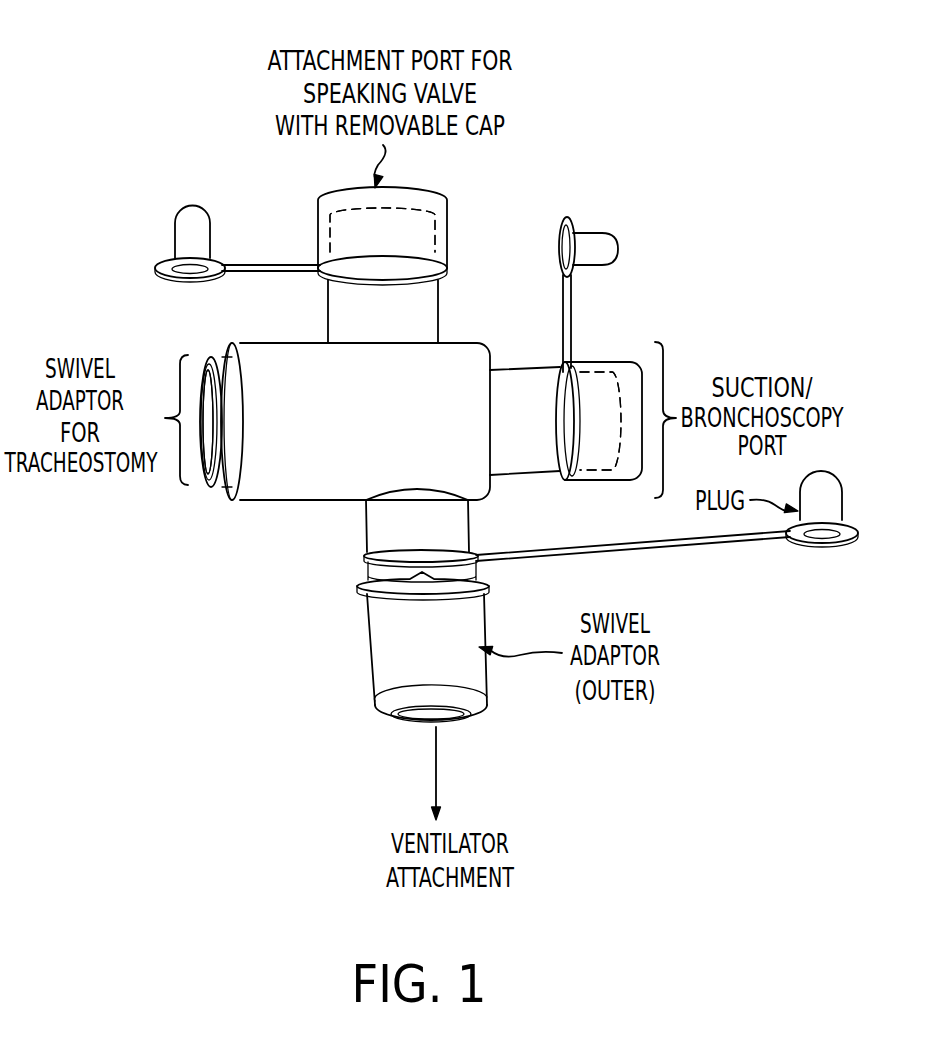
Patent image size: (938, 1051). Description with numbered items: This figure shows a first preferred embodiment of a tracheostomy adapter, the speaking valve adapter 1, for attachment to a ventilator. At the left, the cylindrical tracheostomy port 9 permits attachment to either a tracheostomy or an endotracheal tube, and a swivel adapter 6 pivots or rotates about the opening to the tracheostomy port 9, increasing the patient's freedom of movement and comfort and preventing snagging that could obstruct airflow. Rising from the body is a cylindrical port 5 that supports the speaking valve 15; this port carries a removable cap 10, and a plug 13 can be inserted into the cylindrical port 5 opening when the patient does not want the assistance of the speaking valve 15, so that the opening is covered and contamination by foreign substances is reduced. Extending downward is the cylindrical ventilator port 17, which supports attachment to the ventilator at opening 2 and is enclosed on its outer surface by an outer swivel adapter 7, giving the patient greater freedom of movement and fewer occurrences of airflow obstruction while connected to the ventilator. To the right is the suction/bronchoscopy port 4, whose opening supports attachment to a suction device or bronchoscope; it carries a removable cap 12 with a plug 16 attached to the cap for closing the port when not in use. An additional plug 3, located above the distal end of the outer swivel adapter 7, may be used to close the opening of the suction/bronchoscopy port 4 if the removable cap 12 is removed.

The speaking valve adapter 1 is at (184, 80).
The opening 2 is at (362, 724).
The plug 3 is at (842, 482).
The suction/bronchoscopy port 4 is at (770, 372).
The cylindrical port 5 is at (440, 318).
The swivel adapter 6 is at (232, 502).
The outer swivel adapter 7 is at (665, 657).
The tracheostomy port 9 is at (294, 482).
The removable cap 10 is at (448, 240).
The removable cap 12 is at (596, 366).
The plug 13 is at (148, 238).
The speaking valve 15 is at (292, 238).
The plug 16 is at (618, 248).
The ventilator port 17 is at (350, 622).